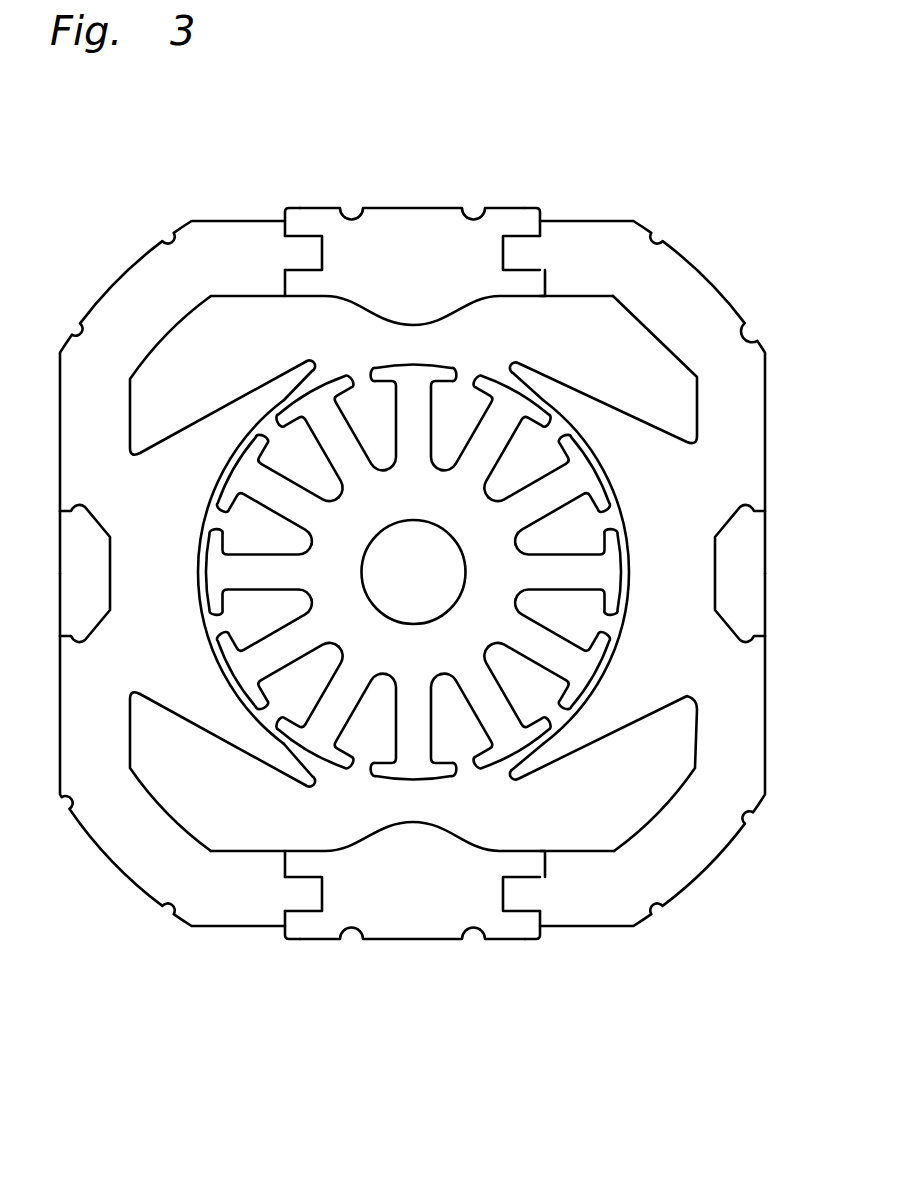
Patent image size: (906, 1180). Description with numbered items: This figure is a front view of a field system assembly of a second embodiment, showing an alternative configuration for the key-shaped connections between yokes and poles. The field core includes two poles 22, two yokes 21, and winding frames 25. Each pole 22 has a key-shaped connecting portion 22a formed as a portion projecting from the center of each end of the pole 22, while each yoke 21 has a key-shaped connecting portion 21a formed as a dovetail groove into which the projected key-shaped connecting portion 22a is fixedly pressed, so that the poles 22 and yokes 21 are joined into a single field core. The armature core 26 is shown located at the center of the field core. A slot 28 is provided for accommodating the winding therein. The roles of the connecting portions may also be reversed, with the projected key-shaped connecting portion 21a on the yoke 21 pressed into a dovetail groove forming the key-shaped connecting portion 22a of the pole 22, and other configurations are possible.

The yoke 21 is at (418, 243).
The key-shaped connecting portion of the yoke 21a is at (295, 234).
The pole 22 is at (668, 281).
The key-shaped connecting portion of the pole 22a is at (303, 263).
The winding frame 25 is at (163, 597).
The armature core 26 is at (497, 557).
The slot 28 is at (650, 382).